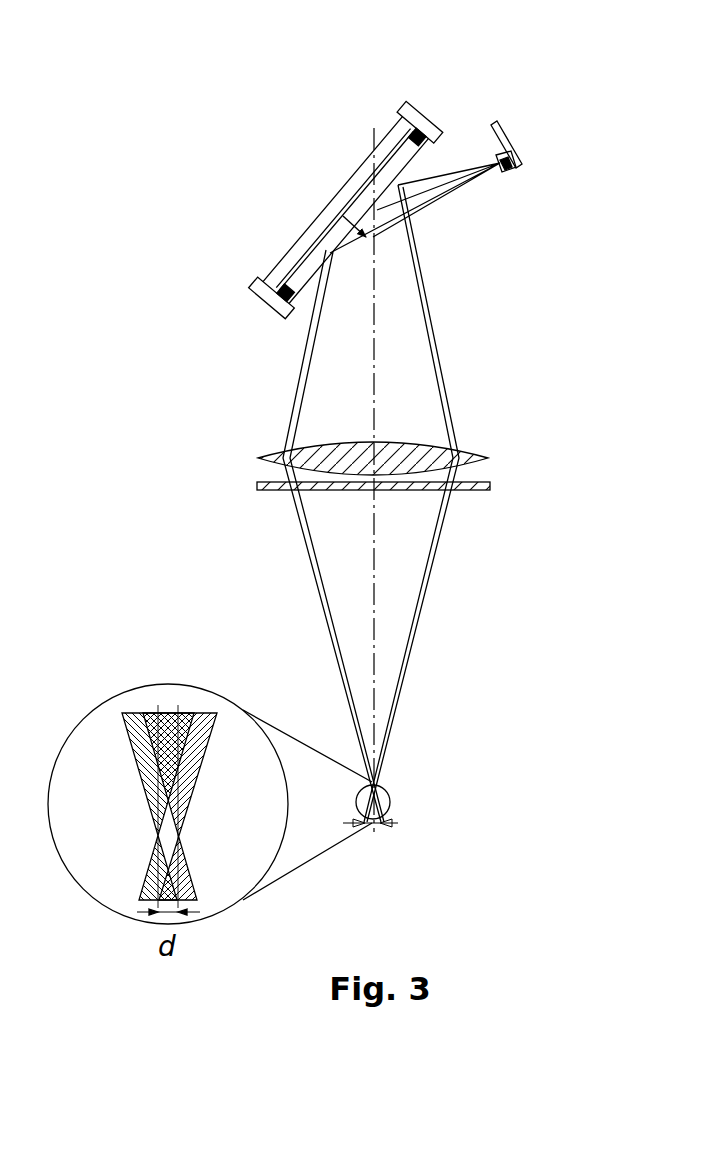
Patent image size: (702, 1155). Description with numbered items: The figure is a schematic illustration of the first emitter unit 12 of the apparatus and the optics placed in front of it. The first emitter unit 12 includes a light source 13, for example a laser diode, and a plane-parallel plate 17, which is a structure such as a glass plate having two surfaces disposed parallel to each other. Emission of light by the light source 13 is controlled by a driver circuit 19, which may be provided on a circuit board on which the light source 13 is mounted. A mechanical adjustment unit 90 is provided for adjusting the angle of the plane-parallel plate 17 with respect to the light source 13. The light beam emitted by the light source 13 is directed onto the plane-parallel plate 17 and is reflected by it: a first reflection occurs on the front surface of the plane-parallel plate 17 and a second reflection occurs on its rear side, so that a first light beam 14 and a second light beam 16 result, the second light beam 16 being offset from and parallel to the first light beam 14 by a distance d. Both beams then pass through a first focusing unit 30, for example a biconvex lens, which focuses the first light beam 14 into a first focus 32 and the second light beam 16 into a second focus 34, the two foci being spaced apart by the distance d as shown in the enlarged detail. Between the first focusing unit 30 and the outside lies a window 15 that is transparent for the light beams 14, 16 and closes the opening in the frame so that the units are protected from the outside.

The first emitter unit 12 is at (306, 74).
The mechanical adjustment unit 90 is at (350, 197).
The plane-parallel plate 17 is at (377, 208).
The driver circuit 19 is at (516, 141).
The light source 13 is at (506, 172).
The first light beam 14 is at (431, 338).
The second light beam 16 is at (304, 548).
The first focusing unit 30 is at (483, 457).
The window 15 is at (492, 486).
The first focus 32 is at (180, 836).
The second focus 34 is at (160, 838).